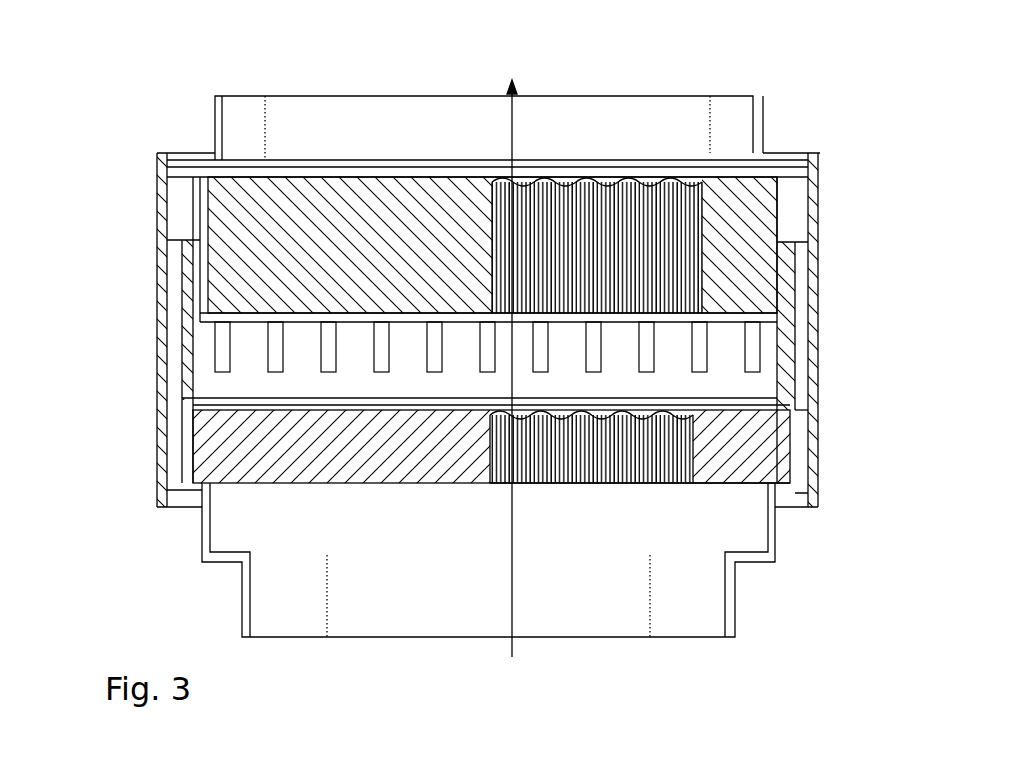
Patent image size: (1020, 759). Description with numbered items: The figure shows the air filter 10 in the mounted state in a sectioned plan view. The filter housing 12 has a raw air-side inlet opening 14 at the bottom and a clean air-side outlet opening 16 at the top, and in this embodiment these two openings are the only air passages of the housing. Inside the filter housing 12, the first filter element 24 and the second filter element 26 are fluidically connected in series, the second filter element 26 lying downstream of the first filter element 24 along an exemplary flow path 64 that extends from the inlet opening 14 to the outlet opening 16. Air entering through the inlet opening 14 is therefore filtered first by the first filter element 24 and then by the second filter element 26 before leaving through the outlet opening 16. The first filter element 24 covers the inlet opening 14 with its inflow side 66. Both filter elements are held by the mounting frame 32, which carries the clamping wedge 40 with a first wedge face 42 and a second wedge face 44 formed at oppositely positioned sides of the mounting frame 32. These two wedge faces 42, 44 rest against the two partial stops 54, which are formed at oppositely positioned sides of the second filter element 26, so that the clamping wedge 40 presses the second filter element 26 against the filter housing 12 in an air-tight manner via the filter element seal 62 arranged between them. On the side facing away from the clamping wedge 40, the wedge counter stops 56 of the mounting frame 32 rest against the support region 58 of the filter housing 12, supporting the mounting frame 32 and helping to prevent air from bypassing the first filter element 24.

The air filter 10 is at (792, 126).
The filter housing 12 is at (215, 117).
The inlet opening 14 is at (455, 595).
The outlet opening 16 is at (656, 117).
The first filter element 24 is at (207, 420).
The second filter element 26 is at (222, 262).
The mounting frame 32 is at (182, 438).
The clamping wedge 40 is at (803, 332).
The first wedge face 42 is at (787, 292).
The second wedge face 44 is at (183, 313).
The partial stops 54 is at (180, 245).
The wedge counter stops 56 is at (172, 490).
The support region 58 is at (172, 493).
The filter element seal 62 is at (195, 168).
The flow path 64 is at (512, 623).
The inflow side 66 is at (700, 481).